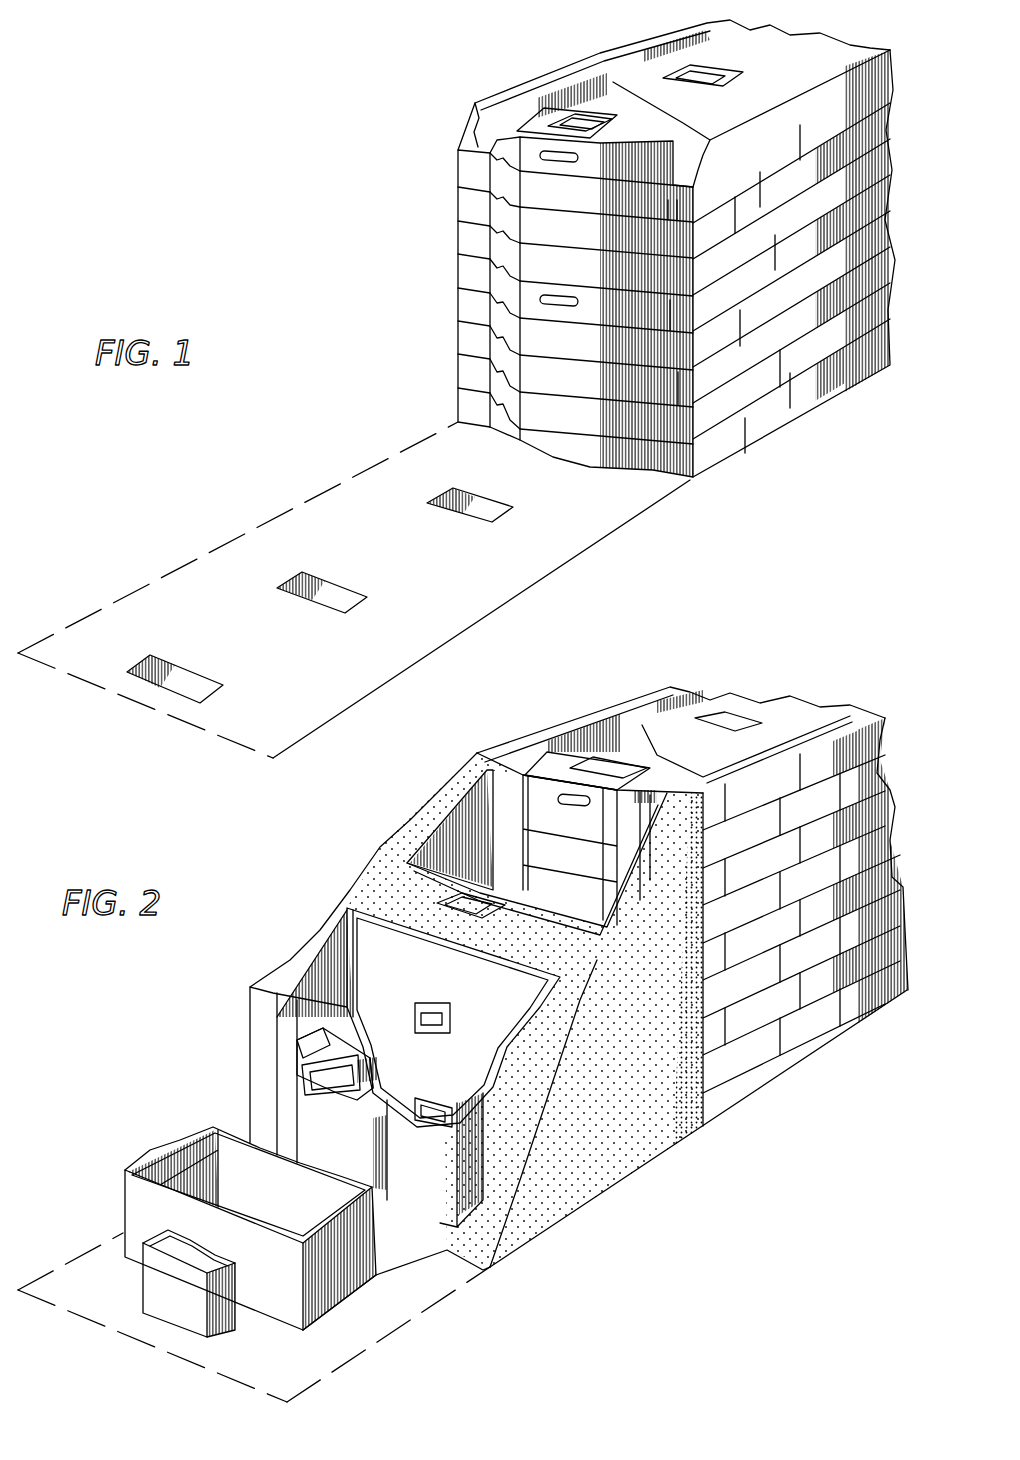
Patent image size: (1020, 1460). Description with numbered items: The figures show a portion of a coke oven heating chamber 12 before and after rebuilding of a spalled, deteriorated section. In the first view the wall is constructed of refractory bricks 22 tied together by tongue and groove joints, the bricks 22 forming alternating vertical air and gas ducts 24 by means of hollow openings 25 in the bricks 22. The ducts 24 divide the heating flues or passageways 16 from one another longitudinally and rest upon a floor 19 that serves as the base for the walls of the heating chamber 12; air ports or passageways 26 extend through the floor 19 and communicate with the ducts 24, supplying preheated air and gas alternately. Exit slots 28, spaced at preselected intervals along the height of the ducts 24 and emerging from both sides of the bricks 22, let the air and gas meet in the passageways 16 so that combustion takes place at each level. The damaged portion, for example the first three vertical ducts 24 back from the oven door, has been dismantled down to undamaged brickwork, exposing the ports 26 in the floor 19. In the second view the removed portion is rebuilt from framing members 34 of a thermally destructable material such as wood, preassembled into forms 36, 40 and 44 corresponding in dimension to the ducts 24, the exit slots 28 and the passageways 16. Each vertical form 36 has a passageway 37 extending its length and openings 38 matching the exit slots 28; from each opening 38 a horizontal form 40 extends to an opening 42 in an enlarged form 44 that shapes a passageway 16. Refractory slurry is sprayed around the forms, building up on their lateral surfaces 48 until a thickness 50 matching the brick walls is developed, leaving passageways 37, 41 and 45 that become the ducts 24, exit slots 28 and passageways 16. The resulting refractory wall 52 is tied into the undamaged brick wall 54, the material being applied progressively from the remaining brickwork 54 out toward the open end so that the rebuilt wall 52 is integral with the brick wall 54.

In FIG. 1, the heating chamber 12 is at (748, 452).
In FIG. 2, the heating chamber 12 is at (617, 1193).
In FIG. 1, the heating flues or passageways 16 is at (817, 66).
In FIG. 2, the heating flues or passageways 16 is at (657, 735).
In FIG. 1, the floor 19 is at (343, 490).
In FIG. 2, the floor 19 is at (395, 1313).
In FIG. 1, the refractory bricks 22 is at (505, 141).
In FIG. 2, the refractory bricks 22 is at (800, 773).
In FIG. 1, the vertical air and gas ducts 24 is at (655, 78).
In FIG. 2, the vertical air and gas ducts 24 is at (735, 725).
In FIG. 1, the hollow openings 25 is at (770, 52).
In FIG. 1, the air ports or passageways 26 is at (480, 498).
In FIG. 1, the exit slots 28 is at (548, 158).
In FIG. 2, the exit slots 28 is at (552, 802).
In FIG. 2, the framing members 34 is at (490, 772).
In FIG. 2, the form 36 is at (290, 1055).
In FIG. 2, the passageway 37 is at (377, 1095).
In FIG. 2, the openings 38 is at (330, 1078).
In FIG. 2, the horizontal forms 40 is at (382, 1078).
In FIG. 2, the passageway 41 is at (430, 1017).
In FIG. 2, the opening 42 is at (440, 1023).
In FIG. 2, the enlarged form 44 is at (337, 913).
In FIG. 2, the passageway 45 is at (640, 838).
In FIG. 2, the lateral surfaces 48 is at (357, 1272).
In FIG. 2, the thickness 50 is at (597, 965).
In FIG. 2, the refractory wall 52 is at (653, 1127).
In FIG. 2, the brick wall 54 is at (787, 1025).